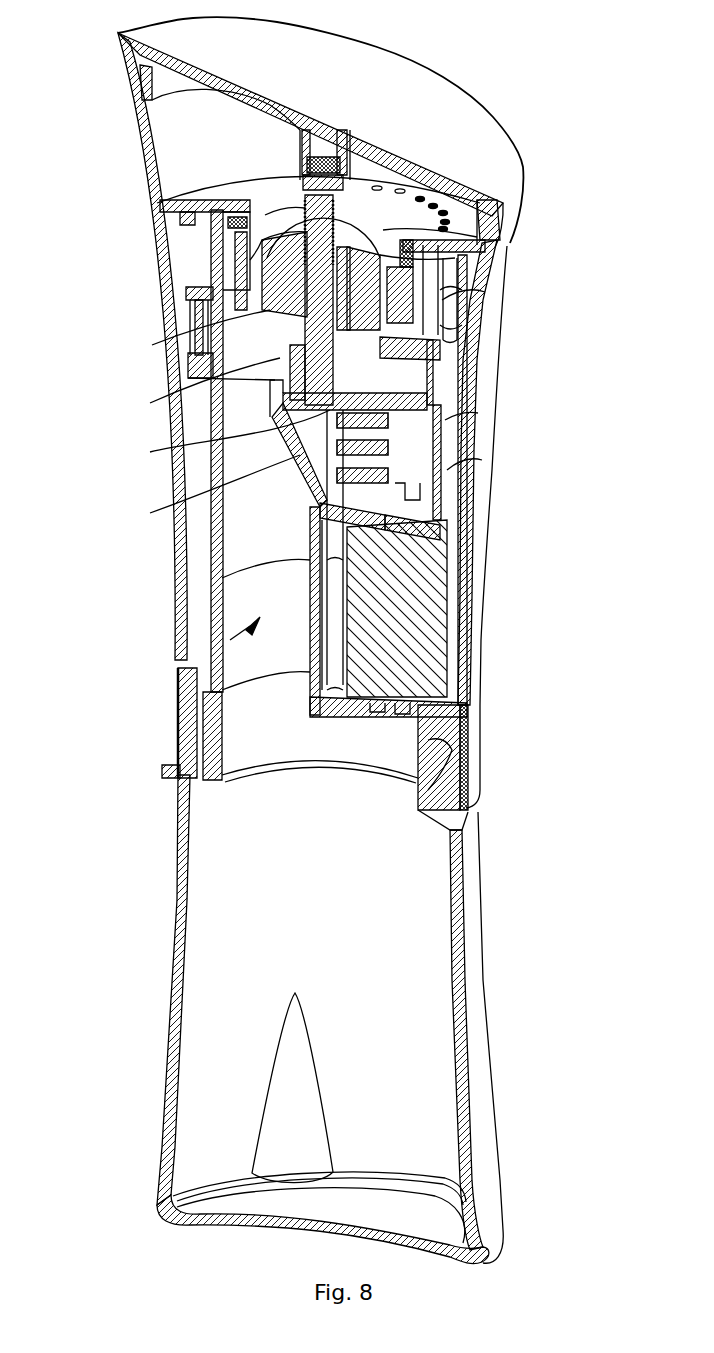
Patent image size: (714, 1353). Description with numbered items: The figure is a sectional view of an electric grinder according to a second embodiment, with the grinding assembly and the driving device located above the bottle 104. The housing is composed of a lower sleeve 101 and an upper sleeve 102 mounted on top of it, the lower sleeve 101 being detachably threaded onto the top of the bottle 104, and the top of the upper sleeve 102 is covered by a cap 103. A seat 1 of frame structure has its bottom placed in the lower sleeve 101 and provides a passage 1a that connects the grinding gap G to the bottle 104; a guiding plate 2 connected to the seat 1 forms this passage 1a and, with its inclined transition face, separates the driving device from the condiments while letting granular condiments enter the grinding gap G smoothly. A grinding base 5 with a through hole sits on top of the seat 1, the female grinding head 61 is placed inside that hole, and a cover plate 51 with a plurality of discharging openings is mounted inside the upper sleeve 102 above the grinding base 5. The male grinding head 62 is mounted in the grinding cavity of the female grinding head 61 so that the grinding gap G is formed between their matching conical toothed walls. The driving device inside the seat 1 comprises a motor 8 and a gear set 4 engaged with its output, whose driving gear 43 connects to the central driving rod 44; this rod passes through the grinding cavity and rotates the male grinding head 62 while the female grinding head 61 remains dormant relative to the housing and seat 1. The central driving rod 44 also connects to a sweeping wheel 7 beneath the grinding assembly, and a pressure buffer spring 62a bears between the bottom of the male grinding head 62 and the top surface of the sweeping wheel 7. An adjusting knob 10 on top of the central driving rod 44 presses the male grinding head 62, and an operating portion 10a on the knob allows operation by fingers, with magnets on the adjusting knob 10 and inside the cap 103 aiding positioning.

The cap 103 is at (470, 128).
The upper sleeve 102 is at (487, 392).
The lower sleeve 101 is at (480, 763).
The bottle 104 is at (473, 973).
The seat 1 is at (205, 705).
The passage 1a is at (205, 652).
The guiding plate 2 is at (230, 510).
The motor 8 is at (420, 580).
The sweeping wheel 7 is at (485, 350).
The gear set 4 is at (470, 440).
The central driving rod 44 is at (290, 432).
The driving gear 43 is at (275, 382).
The grinding gap G is at (230, 347).
The male grinding head 62 is at (200, 290).
The cover plate 51 is at (217, 197).
The operating portion 10a is at (300, 160).
The adjusting knob 10 is at (470, 200).
The female grinding head 61 is at (493, 243).
The pressure buffer spring 62a is at (483, 280).
The grinding base 5 is at (453, 313).